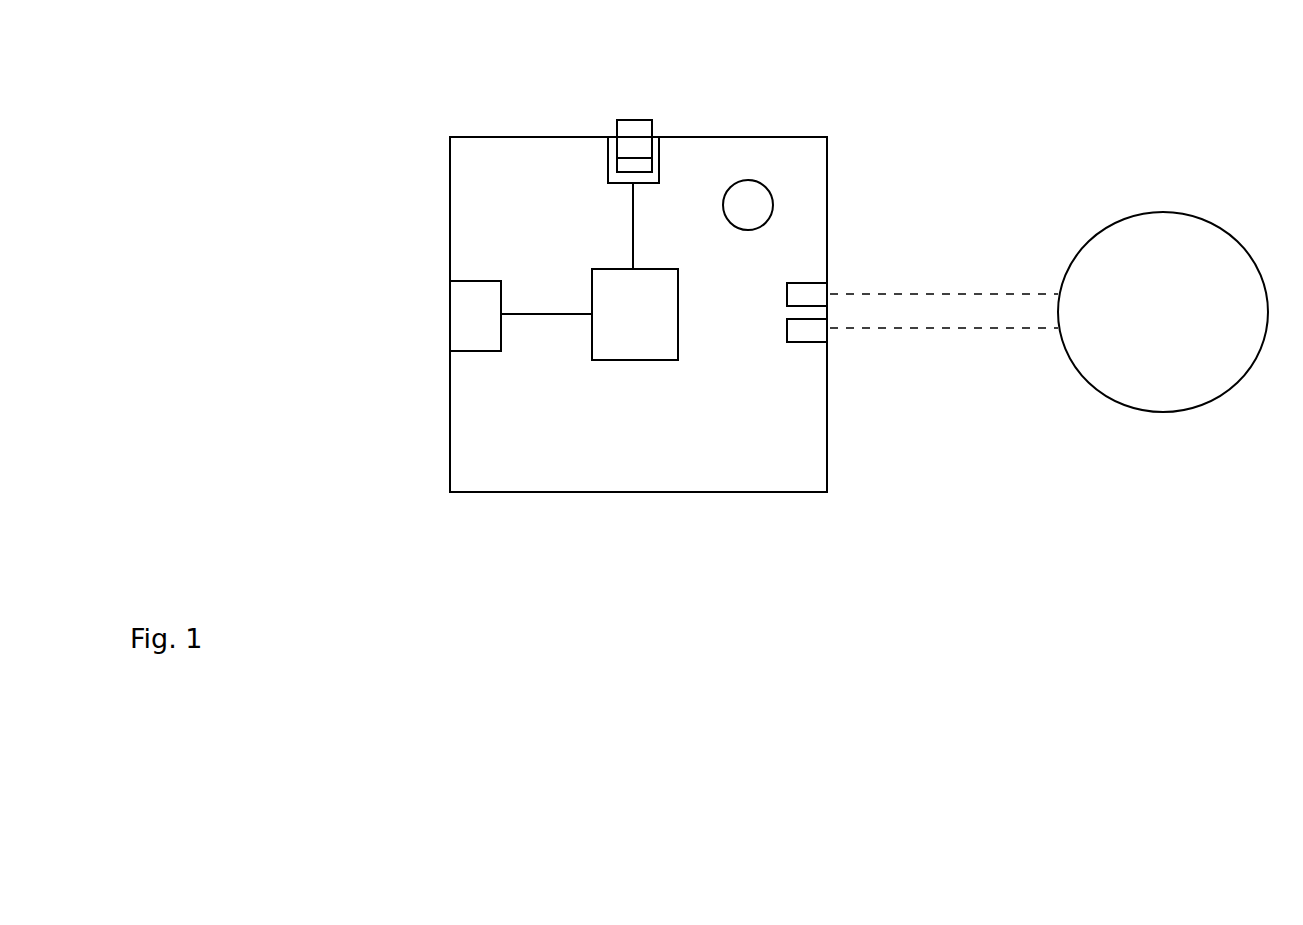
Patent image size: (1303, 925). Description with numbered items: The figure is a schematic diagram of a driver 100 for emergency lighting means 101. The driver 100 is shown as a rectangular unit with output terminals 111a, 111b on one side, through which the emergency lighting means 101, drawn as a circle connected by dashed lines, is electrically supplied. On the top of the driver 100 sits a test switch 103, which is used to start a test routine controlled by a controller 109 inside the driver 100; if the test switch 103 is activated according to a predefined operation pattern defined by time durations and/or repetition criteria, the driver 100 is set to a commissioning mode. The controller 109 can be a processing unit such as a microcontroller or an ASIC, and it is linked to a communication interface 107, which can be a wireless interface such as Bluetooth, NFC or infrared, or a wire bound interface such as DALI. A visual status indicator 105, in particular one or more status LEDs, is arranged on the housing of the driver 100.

The driver 100 is at (900, 80).
The emergency lighting means 101 is at (1190, 412).
The test switch 103 is at (604, 124).
The visual status indicator 105 is at (774, 204).
The communication interface 107 is at (473, 353).
The controller 109 is at (634, 362).
The output terminal 111a is at (830, 286).
The output terminal 111b is at (807, 343).